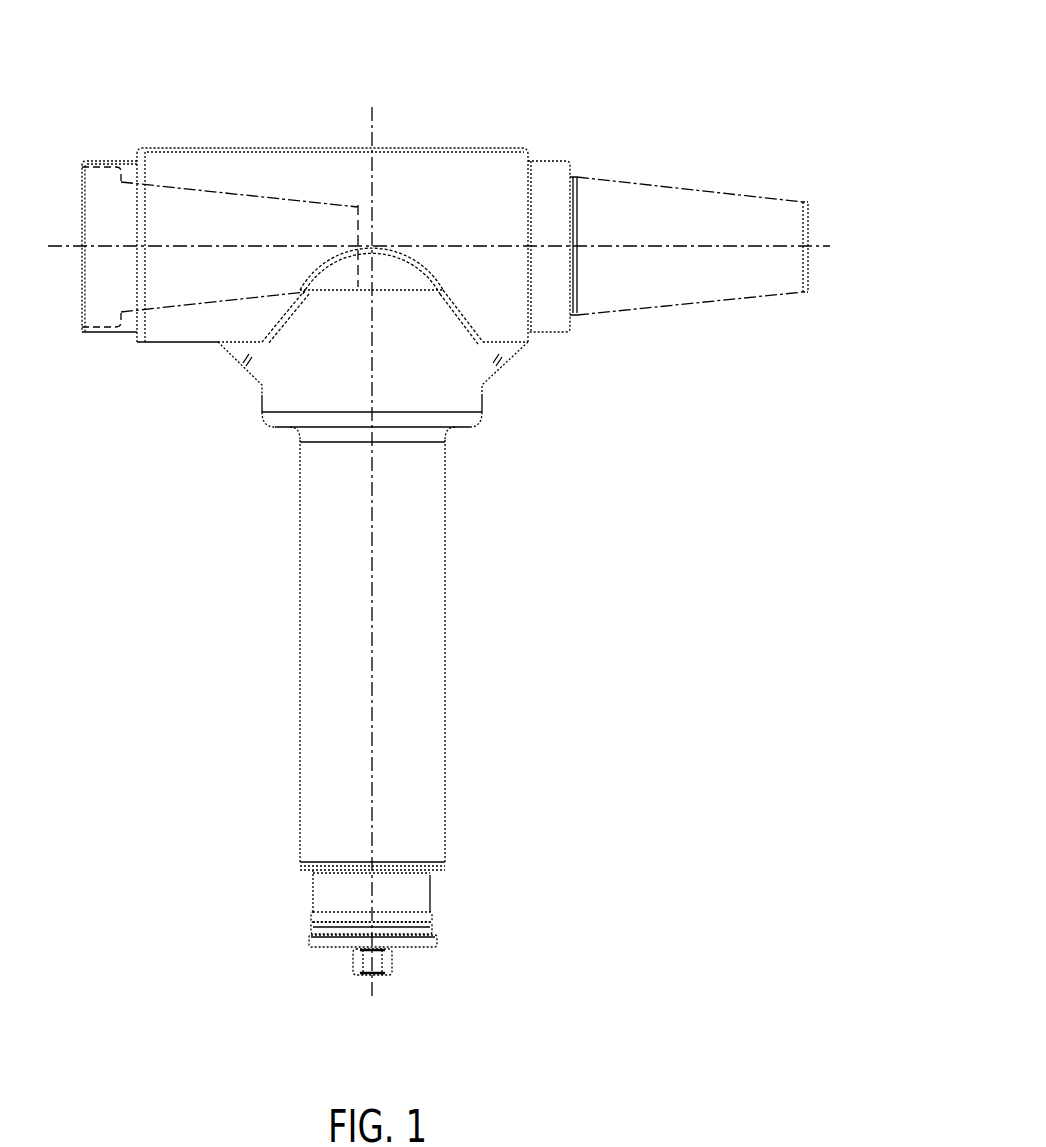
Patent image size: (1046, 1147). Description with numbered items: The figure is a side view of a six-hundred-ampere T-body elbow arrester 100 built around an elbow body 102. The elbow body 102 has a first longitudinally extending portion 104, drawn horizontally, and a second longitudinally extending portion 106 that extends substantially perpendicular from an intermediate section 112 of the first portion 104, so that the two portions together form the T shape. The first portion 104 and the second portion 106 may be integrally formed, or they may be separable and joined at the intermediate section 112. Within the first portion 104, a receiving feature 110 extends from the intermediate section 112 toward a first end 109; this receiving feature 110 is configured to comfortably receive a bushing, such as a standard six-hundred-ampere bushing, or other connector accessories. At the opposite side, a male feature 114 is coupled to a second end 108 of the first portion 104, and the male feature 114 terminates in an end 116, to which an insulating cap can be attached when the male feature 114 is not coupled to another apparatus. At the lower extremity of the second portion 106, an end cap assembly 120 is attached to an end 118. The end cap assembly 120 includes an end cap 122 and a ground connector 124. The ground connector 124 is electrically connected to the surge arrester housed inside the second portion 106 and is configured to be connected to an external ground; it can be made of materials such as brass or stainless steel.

The T-body elbow arrester 100 is at (769, 35).
The elbow body 102 is at (548, 512).
The first longitudinally extending portion 104 is at (263, 152).
The second longitudinally extending portion 106 is at (305, 738).
The second end 108 is at (528, 150).
The first end 109 is at (143, 150).
The receiving feature 110 is at (174, 293).
The intermediate section 112 is at (386, 152).
The male feature 114 is at (717, 195).
The male feature end 116 is at (808, 222).
The end of second portion 118 is at (437, 928).
The end cap assembly 120 is at (291, 940).
The end cap 122 is at (437, 938).
The ground connector 124 is at (400, 970).